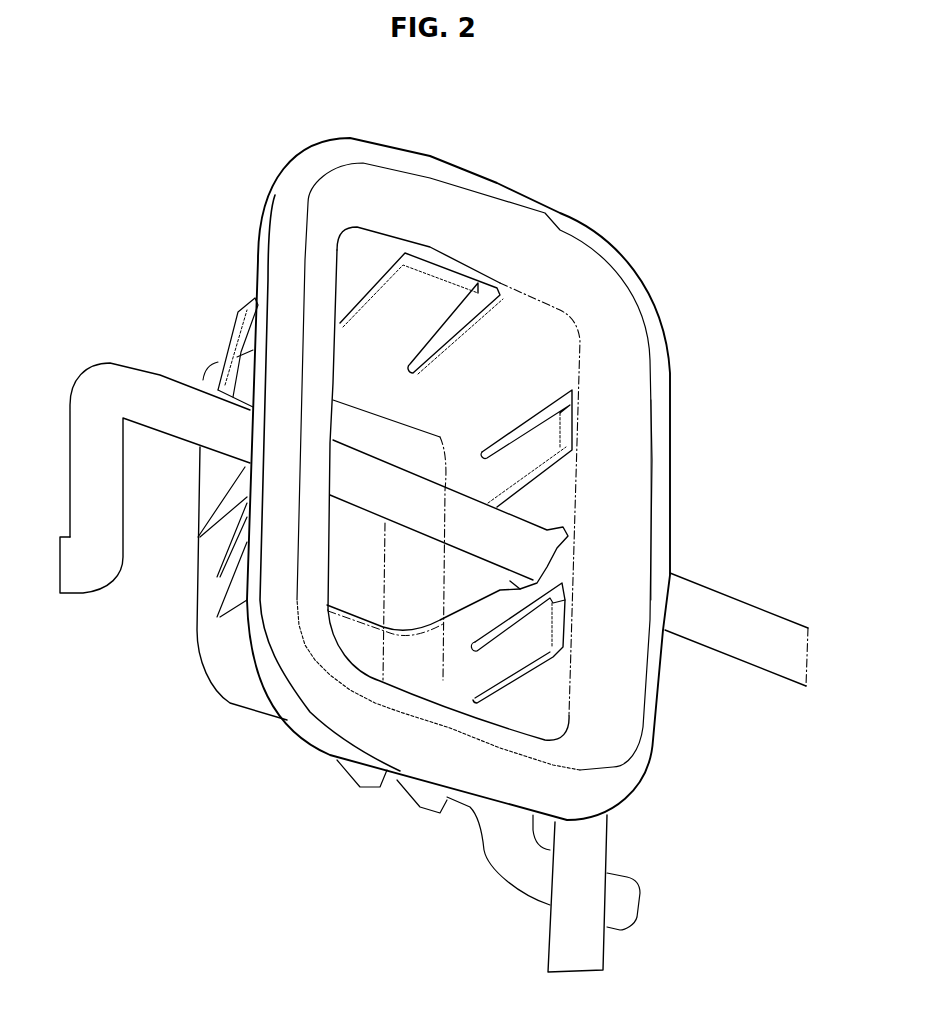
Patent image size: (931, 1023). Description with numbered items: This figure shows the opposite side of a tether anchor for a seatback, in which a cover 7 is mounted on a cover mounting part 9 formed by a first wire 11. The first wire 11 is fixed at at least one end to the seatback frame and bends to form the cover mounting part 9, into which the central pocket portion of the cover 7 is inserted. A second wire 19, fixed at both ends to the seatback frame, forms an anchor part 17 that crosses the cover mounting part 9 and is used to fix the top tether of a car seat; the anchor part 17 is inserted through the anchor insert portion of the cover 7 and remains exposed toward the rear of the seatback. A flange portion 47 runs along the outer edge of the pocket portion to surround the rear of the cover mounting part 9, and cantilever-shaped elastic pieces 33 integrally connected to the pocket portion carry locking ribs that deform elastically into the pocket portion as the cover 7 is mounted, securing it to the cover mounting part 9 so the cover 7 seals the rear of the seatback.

The cover 7 is at (593, 290).
The cover mounting part 9 is at (313, 730).
The first wire 11 is at (570, 947).
The anchor part 17 is at (382, 490).
The second wire 19 is at (737, 637).
The elastic pieces 33 is at (413, 310).
The flange portion 47 is at (660, 530).